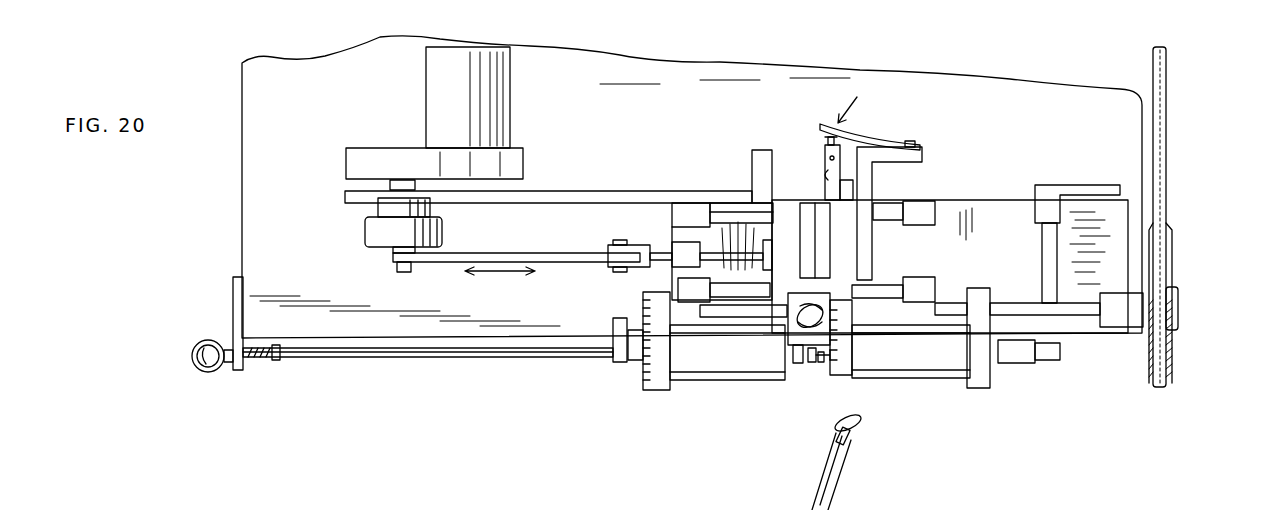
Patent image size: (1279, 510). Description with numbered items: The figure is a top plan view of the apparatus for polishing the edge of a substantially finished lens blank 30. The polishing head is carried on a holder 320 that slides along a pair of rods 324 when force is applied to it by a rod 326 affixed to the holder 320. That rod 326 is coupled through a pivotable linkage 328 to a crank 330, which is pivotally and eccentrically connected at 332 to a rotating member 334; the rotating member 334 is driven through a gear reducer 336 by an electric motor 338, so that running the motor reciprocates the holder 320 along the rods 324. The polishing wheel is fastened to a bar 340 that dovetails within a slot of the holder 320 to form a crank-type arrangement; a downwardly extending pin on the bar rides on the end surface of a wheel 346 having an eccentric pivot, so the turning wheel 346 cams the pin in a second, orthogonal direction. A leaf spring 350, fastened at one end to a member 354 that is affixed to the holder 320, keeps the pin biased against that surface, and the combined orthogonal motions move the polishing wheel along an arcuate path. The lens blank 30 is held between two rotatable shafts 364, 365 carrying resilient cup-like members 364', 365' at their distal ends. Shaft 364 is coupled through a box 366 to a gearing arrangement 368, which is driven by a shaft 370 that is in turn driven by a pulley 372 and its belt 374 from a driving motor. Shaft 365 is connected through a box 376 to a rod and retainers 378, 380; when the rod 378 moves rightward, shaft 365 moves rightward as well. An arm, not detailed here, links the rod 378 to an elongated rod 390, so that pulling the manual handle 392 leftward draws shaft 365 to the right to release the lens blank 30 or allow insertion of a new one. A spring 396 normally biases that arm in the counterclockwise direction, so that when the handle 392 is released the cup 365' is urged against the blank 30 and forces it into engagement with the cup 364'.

The lens blank 30 is at (786, 333).
The holder 320 is at (782, 215).
The rods 324 is at (727, 215).
The rod 326 is at (708, 240).
The pivotable linkage 328 is at (628, 242).
The crank 330 is at (566, 255).
The eccentric pivotal connection 332 is at (443, 275).
The rotating member 334 is at (377, 227).
The gear reducer 336 is at (365, 163).
The electric motor 338 is at (493, 100).
The bar 340 is at (838, 190).
The wheel 346 is at (828, 170).
The leaf spring 350 is at (847, 140).
The member 354 is at (862, 168).
The rotatable shaft 364 is at (778, 393).
The resilient cup-like member 364' is at (817, 436).
The rotatable shaft 365 is at (858, 384).
The resilient cup-like member 365' is at (838, 381).
The box 366 is at (698, 345).
The gearing arrangement 368 is at (643, 318).
The shaft 370 is at (952, 312).
The pulley 372 is at (1175, 287).
The belt 374 is at (1157, 122).
The box 376 is at (947, 360).
The rod 378 is at (1048, 358).
The retainer 380 is at (1052, 345).
The elongated rod 390 is at (443, 357).
The manual handle 392 is at (212, 361).
The spring 396 is at (272, 354).